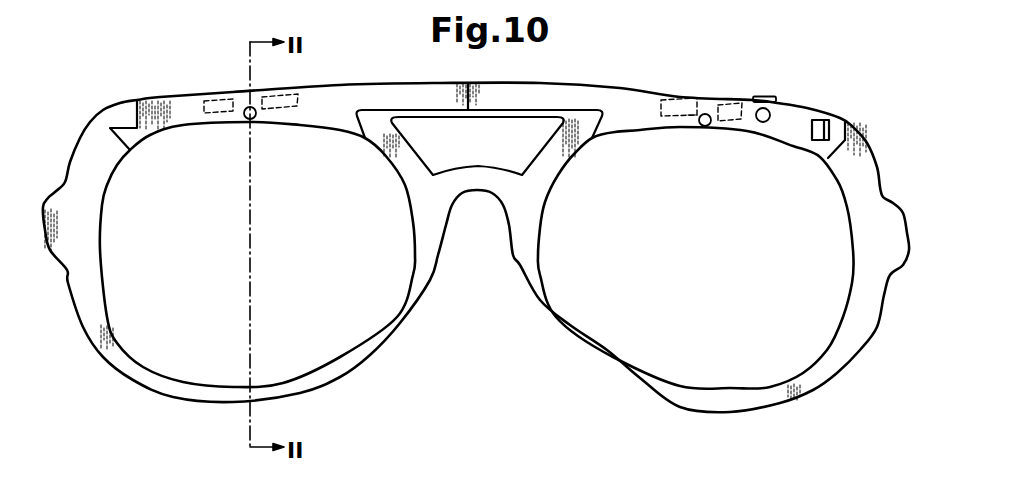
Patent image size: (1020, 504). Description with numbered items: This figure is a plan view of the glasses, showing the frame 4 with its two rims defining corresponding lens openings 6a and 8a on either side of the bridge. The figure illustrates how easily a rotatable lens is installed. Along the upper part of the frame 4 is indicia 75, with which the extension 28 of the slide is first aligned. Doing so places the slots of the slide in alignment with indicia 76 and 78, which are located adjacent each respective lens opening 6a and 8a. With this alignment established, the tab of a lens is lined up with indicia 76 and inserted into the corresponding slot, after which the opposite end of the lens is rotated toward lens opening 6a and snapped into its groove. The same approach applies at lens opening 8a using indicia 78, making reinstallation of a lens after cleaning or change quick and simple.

The frame 4 is at (880, 164).
The lens opening 6a is at (350, 310).
The lens opening 8a is at (587, 302).
The extension 28 is at (765, 97).
The indicia 75 is at (770, 113).
The indicia 76 is at (247, 120).
The indicia 78 is at (707, 127).